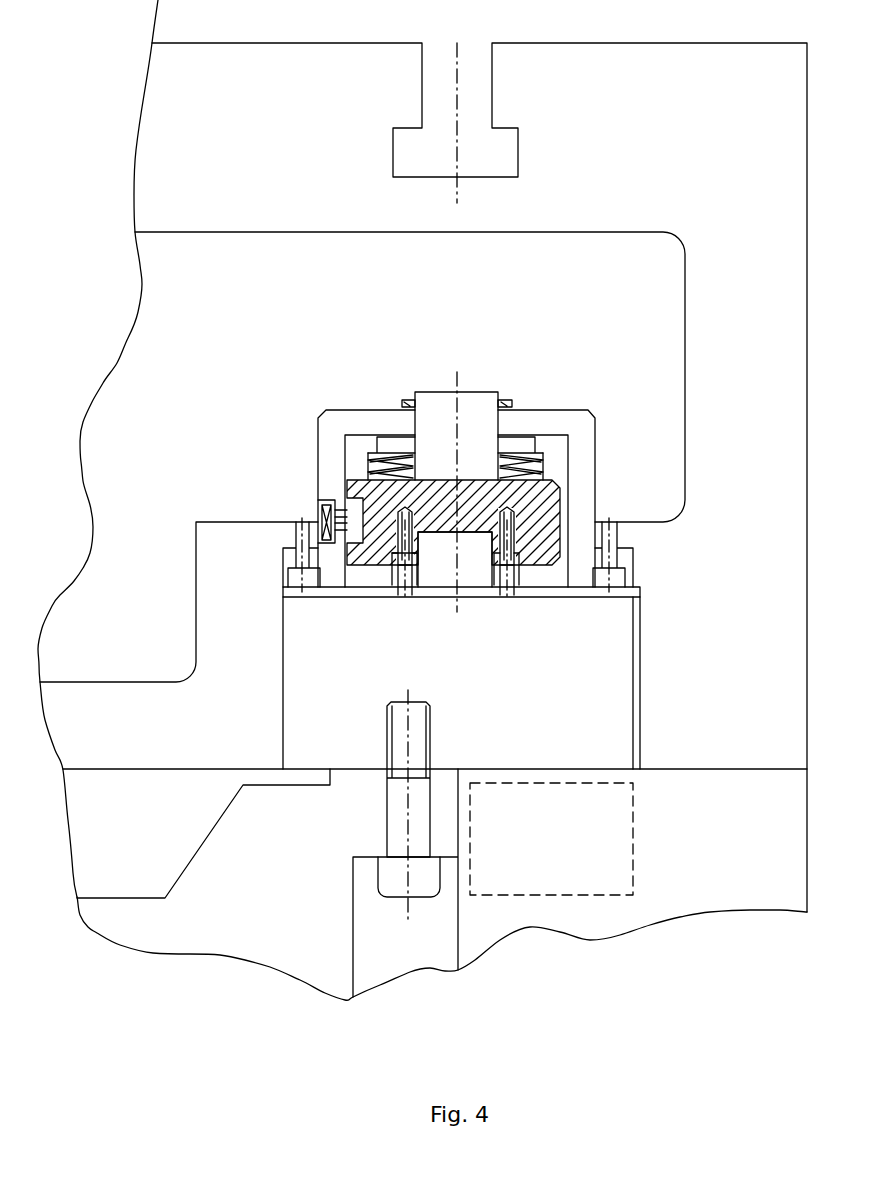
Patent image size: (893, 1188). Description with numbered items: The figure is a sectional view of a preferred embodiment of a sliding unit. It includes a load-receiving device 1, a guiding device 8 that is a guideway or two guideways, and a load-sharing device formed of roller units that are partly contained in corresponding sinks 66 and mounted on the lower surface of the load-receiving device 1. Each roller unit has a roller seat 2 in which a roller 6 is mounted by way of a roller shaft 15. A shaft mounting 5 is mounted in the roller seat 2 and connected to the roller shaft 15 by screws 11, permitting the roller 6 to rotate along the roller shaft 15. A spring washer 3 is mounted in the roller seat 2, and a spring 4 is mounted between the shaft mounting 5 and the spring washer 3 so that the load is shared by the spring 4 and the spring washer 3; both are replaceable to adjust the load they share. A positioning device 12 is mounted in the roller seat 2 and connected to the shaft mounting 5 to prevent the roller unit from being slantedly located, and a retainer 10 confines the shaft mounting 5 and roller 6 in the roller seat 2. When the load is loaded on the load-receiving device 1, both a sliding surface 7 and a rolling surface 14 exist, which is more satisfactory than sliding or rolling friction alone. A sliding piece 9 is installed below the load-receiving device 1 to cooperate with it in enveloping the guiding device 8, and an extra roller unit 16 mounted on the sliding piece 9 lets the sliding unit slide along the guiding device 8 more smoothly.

The load-receiving device 1 is at (794, 331).
The sinks 66 is at (673, 271).
The roller seat 2 is at (578, 418).
The spring washer 3 is at (513, 445).
The spring 4 is at (548, 445).
The shaft mounting 5 is at (552, 491).
The roller 6 is at (445, 567).
The sliding surface 7 is at (343, 597).
The guiding device 8 is at (530, 744).
The sliding piece 9 is at (795, 838).
The retainer 10 is at (402, 400).
The screws 11 is at (403, 511).
The positioning device 12 is at (330, 545).
The rolling surface 14 is at (466, 590).
The roller shaft 15 is at (413, 570).
The roller unit 16 is at (618, 830).